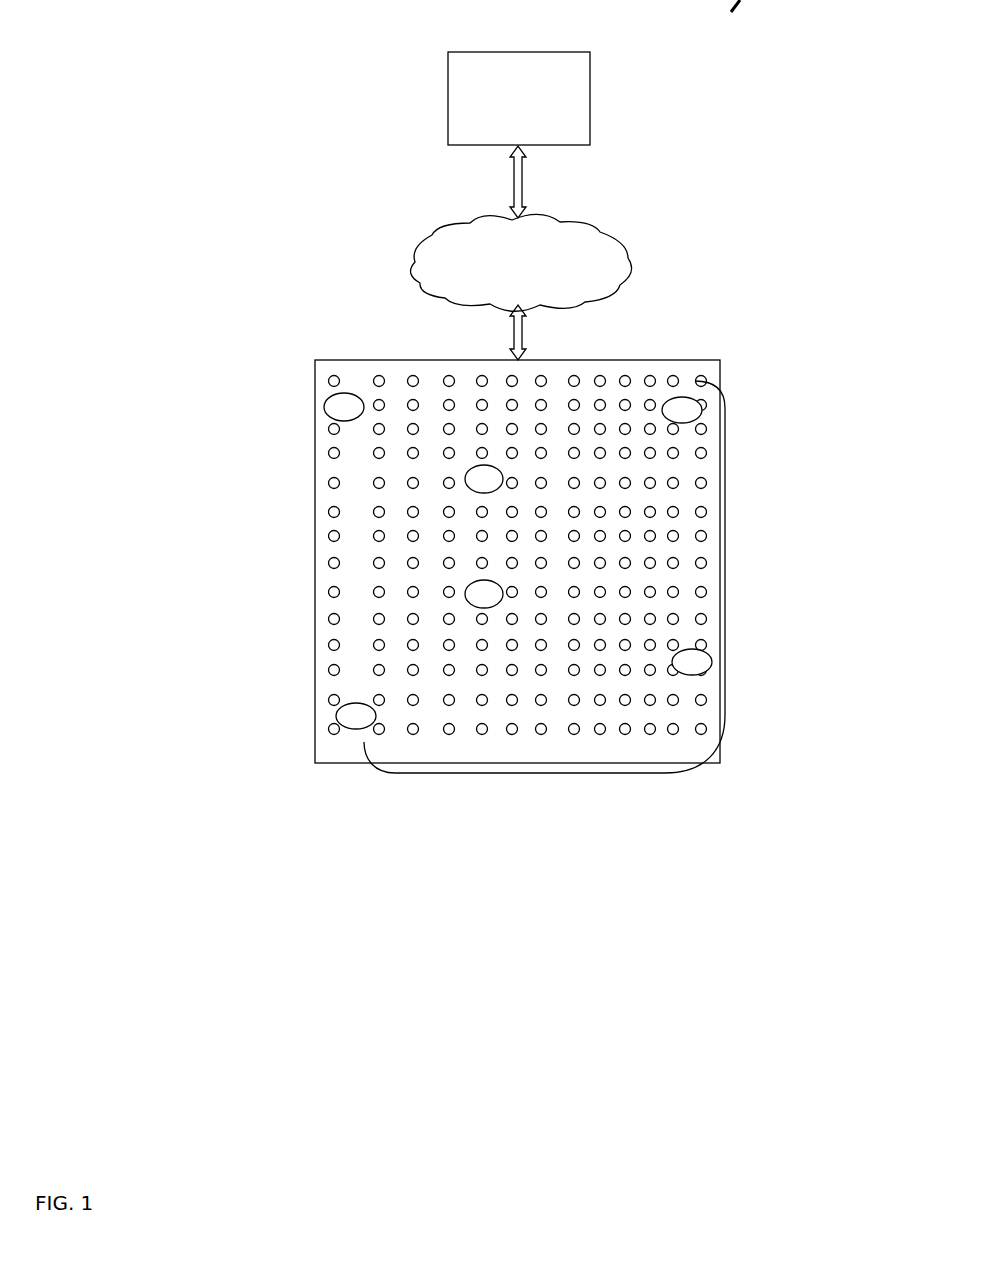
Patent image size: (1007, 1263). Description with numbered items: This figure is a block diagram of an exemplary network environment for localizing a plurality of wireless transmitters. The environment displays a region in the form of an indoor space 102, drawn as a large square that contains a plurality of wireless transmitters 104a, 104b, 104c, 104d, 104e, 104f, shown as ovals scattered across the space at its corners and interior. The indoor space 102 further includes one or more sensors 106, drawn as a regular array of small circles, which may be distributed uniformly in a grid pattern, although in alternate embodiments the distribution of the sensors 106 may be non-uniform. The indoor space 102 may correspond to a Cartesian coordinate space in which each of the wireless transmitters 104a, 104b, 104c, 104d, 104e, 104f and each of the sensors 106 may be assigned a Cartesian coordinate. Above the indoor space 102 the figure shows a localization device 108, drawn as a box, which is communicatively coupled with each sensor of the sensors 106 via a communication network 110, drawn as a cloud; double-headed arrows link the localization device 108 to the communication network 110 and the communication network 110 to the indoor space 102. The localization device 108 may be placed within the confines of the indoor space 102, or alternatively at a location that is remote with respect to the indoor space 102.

The indoor space 102 is at (602, 360).
The wireless transmitter 104a is at (325, 402).
The wireless transmitter 104b is at (338, 716).
The wireless transmitter 104c is at (690, 675).
The wireless transmitter 104d is at (681, 398).
The wireless transmitter 104e is at (466, 477).
The wireless transmitter 104f is at (466, 592).
The sensors 106 is at (725, 567).
The localization device 108 is at (519, 98).
The communication network 110 is at (521, 262).